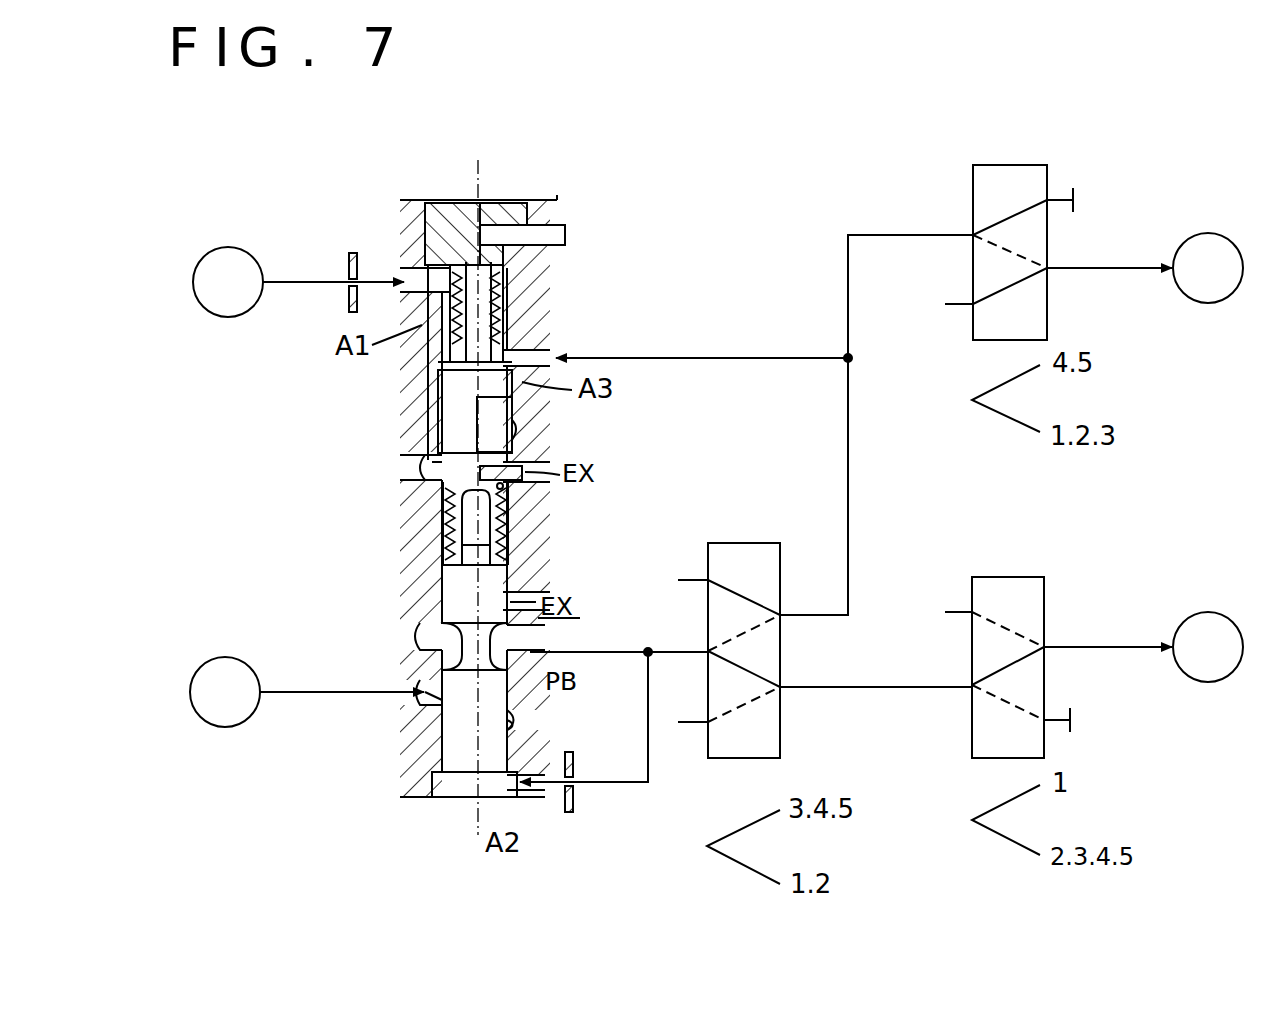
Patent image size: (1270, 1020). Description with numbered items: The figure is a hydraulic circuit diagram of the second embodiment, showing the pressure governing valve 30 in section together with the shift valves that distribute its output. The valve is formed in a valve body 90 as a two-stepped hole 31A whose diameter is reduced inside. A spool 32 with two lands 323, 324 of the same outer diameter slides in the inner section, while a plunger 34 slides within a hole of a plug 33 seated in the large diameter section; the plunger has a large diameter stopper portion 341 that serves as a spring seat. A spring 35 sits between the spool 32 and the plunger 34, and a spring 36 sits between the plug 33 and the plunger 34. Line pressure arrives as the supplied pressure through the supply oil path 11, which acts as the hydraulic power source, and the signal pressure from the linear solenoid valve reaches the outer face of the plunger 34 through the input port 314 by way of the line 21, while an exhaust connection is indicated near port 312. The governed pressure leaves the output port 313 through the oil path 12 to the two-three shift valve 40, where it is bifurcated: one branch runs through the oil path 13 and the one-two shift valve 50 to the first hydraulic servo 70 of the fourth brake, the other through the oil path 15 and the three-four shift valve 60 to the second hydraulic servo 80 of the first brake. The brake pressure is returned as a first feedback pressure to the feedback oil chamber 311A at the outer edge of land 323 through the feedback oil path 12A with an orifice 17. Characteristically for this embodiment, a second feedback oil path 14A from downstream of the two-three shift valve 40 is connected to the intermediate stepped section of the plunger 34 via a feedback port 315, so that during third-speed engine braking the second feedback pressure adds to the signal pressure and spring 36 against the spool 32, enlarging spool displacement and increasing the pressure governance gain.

The valve body 90 is at (412, 200).
The plug 33 is at (504, 203).
The pressure governing valve 30 is at (553, 197).
The input port 314 is at (405, 245).
The accumulator pressure line 21 is at (305, 285).
The spring 36 is at (515, 292).
The feedback port 315 is at (520, 356).
The plunger 34 is at (440, 400).
The stepped hole 31A is at (525, 440).
The spring 35 is at (422, 468).
The large diameter stopper portion 341 is at (535, 488).
The land 324 is at (455, 572).
The output port 313 is at (532, 640).
The land 323 is at (438, 765).
The port 312 is at (428, 708).
The spool 32 is at (507, 735).
The feedback oil chamber 311A is at (434, 797).
The supply oil path 11 is at (305, 695).
The oil path 12 is at (650, 648).
The feedback oil path 12A is at (628, 786).
The orifice 17 is at (578, 774).
The second feedback oil path 14A is at (700, 362).
The oil path 15 is at (850, 440).
The oil path 13 is at (880, 686).
The 3-4 shift valve 60 is at (973, 182).
The second hydraulic servo 80 is at (1224, 234).
The 2-3 shift valve 40 is at (812, 565).
The 1-2 shift valve 50 is at (1046, 590).
The first hydraulic servo 70 is at (1222, 620).